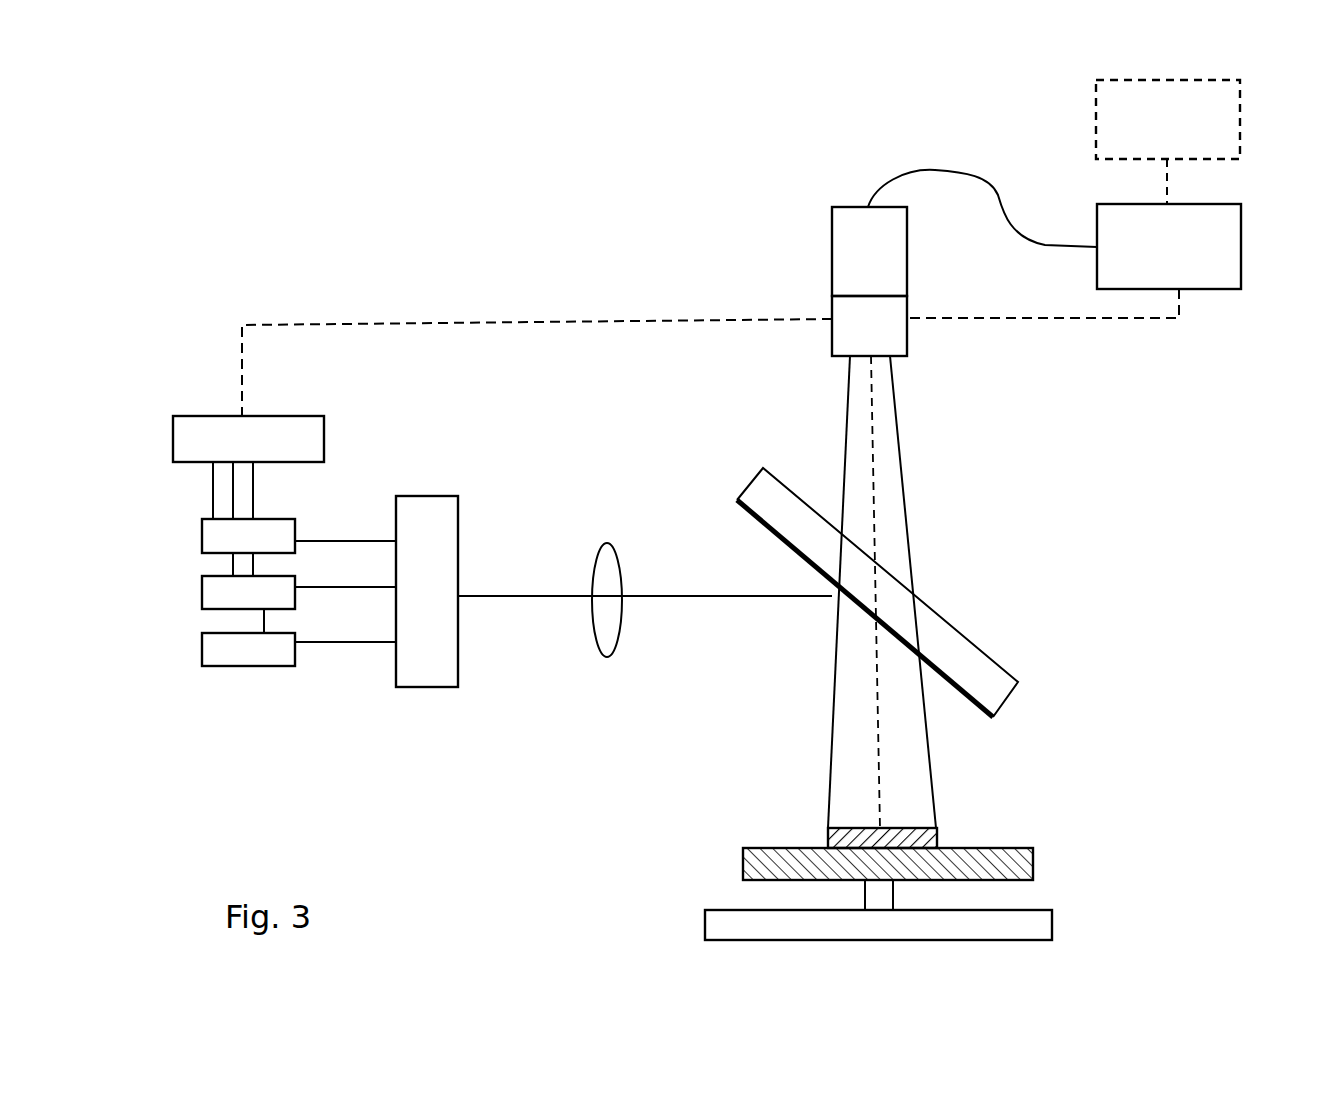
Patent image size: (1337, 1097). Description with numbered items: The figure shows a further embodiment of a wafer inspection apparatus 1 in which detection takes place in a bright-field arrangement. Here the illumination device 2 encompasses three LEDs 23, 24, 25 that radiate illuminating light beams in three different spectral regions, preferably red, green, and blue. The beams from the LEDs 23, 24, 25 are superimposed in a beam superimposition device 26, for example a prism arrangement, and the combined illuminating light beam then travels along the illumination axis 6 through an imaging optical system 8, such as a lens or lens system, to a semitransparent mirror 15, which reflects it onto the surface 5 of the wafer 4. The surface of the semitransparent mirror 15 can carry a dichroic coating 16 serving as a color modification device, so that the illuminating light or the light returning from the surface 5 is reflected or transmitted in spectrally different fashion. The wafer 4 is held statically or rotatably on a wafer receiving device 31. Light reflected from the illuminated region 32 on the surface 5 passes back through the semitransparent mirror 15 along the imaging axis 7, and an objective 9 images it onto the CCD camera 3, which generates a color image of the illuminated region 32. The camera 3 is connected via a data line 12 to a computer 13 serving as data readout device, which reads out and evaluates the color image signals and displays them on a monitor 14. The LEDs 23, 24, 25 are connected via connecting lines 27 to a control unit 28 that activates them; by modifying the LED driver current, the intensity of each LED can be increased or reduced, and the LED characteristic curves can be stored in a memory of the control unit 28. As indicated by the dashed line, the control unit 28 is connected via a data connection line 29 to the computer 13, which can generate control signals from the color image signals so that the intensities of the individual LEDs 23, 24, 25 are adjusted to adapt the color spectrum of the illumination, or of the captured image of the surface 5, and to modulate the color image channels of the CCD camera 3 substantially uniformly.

The wafer inspection apparatus 1 is at (345, 268).
The illumination device 2 is at (205, 714).
The CCD camera 3 is at (893, 252).
The wafer 4 is at (1033, 862).
The surface 5 is at (757, 845).
The illumination axis 6 is at (743, 596).
The imaging axis 7 is at (875, 752).
The imaging optical system 8 is at (608, 562).
The objective 9 is at (905, 345).
The data line 12 is at (974, 182).
The computer 13 is at (1230, 248).
The monitor 14 is at (1228, 113).
The semitransparent mirror 15 is at (967, 662).
The dichroic coating 16 is at (928, 660).
The LED 23 is at (213, 655).
The LED 24 is at (213, 598).
The LED 25 is at (213, 542).
The beam superimposition device 26 is at (437, 529).
The connecting lines 27 is at (255, 496).
The control unit 28 is at (292, 427).
The data connection line 29 is at (597, 312).
The wafer receiving device 31 is at (1040, 922).
The illuminated region 32 is at (937, 828).